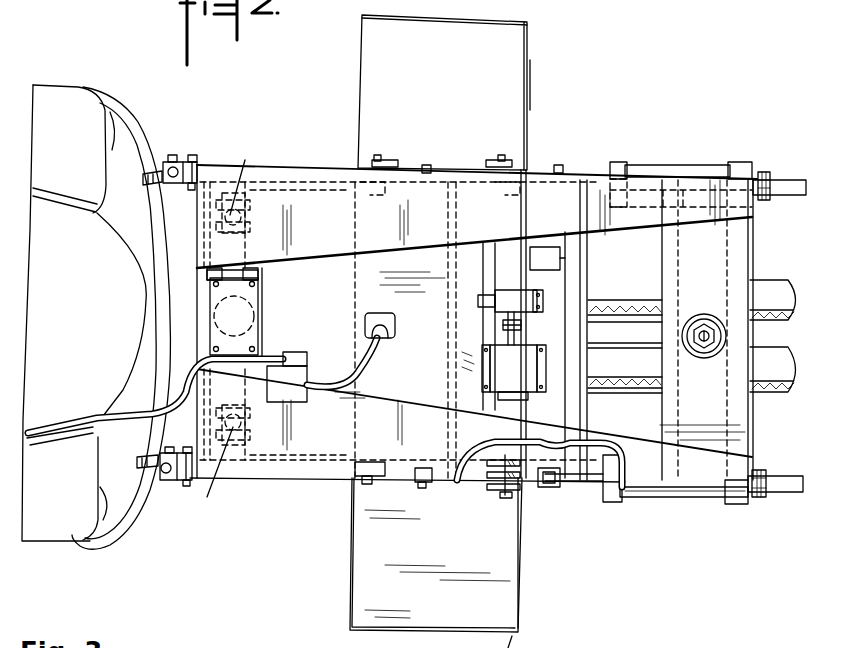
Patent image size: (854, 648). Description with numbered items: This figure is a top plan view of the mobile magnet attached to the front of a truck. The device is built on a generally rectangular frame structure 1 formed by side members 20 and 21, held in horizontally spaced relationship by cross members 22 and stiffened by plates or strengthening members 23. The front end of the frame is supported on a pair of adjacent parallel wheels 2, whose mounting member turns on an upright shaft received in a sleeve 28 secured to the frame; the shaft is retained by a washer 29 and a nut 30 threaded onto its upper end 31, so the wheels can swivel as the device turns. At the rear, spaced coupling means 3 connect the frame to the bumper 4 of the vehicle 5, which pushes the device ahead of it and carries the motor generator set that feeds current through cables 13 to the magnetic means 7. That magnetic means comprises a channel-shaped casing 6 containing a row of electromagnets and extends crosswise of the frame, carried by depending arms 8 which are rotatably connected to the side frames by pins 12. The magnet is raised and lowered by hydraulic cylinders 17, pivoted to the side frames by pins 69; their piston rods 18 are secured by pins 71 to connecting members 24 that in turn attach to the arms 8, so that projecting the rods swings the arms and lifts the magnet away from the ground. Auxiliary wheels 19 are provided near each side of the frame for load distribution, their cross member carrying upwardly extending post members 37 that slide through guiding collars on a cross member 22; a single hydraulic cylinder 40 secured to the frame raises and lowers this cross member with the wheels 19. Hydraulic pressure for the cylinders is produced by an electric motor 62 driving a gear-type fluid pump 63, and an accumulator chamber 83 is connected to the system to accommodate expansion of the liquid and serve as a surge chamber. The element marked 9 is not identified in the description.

The frame structure 1 is at (553, 156).
The wheels 2 is at (790, 286).
The coupling means 3 is at (193, 147).
The bumper 4 is at (143, 124).
The vehicle 5 is at (64, 73).
The casing 6 is at (516, 642).
The magnetic means 7 is at (545, 84).
The depending arms 8 is at (512, 499).
The upper panel 9 is at (452, 21).
The pins 12 is at (426, 166).
The cables 13 is at (118, 408).
The hydraulic cylinder 17 is at (681, 166).
The piston rod 18 is at (604, 175).
The wheels 19 is at (250, 207).
The side member 20 is at (800, 500).
The side member 21 is at (790, 180).
The cross members 22 is at (252, 268).
The strengthening members 23 is at (333, 230).
The connecting members 24 is at (462, 488).
The sleeve 28 is at (682, 335).
The washer 29 is at (722, 337).
The nut 30 is at (694, 350).
The upper end of shaft 31 is at (706, 325).
The post members 37 is at (228, 326).
The hydraulic cylinder 40 is at (240, 330).
The electric motor 62 is at (540, 371).
The fluid pump 63 is at (543, 302).
The pins 69 is at (763, 172).
The pins 71 is at (548, 468).
The accumulator chamber 83 is at (545, 262).